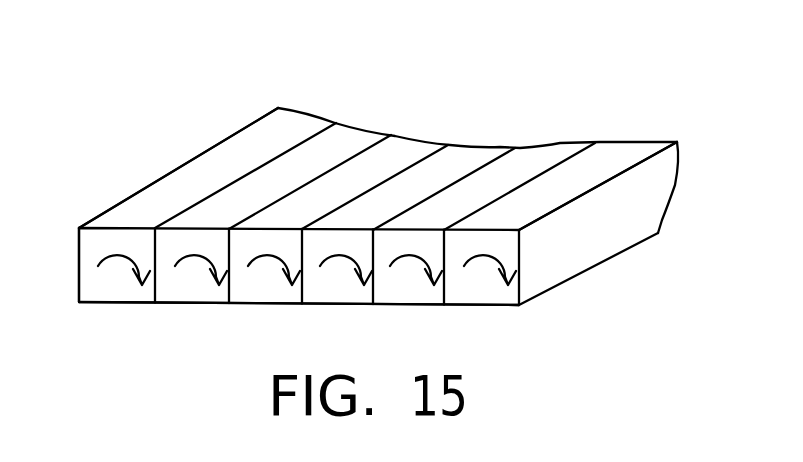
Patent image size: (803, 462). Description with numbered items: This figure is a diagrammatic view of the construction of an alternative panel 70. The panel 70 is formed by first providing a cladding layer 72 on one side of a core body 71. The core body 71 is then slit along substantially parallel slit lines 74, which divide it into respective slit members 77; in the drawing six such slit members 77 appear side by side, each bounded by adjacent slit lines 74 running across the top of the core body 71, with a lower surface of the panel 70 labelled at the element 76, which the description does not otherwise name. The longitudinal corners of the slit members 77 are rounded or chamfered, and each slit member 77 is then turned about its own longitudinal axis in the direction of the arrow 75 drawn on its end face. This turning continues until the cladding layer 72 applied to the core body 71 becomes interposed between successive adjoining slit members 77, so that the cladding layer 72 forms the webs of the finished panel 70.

The alternative panel 70 is at (398, 105).
The core body 71 is at (145, 240).
The cladding layer 72 is at (109, 218).
The slit line 74 is at (247, 160).
The arrow 75 is at (482, 245).
The bottom wall 76 is at (140, 305).
The slit member 77 is at (605, 167).